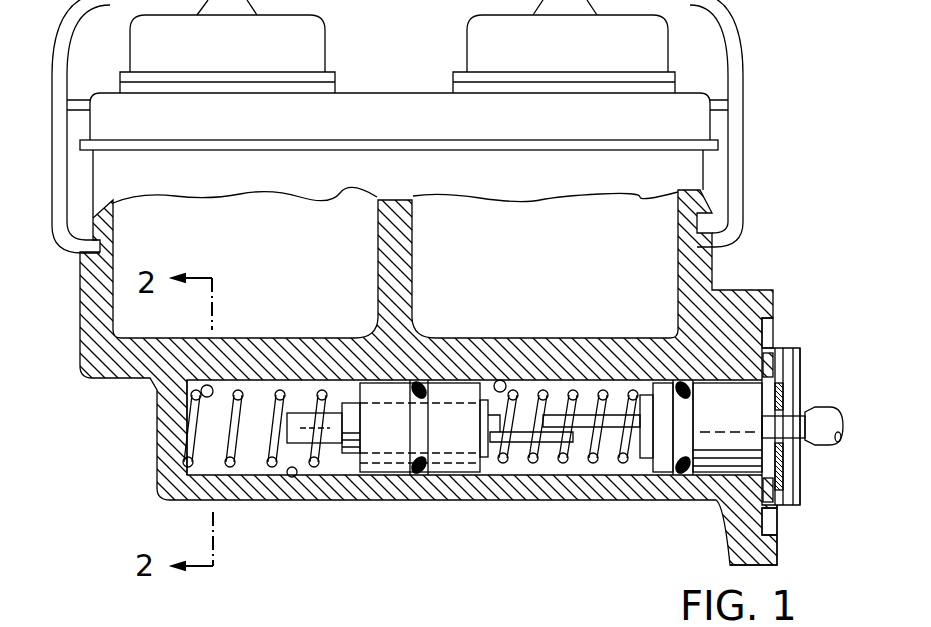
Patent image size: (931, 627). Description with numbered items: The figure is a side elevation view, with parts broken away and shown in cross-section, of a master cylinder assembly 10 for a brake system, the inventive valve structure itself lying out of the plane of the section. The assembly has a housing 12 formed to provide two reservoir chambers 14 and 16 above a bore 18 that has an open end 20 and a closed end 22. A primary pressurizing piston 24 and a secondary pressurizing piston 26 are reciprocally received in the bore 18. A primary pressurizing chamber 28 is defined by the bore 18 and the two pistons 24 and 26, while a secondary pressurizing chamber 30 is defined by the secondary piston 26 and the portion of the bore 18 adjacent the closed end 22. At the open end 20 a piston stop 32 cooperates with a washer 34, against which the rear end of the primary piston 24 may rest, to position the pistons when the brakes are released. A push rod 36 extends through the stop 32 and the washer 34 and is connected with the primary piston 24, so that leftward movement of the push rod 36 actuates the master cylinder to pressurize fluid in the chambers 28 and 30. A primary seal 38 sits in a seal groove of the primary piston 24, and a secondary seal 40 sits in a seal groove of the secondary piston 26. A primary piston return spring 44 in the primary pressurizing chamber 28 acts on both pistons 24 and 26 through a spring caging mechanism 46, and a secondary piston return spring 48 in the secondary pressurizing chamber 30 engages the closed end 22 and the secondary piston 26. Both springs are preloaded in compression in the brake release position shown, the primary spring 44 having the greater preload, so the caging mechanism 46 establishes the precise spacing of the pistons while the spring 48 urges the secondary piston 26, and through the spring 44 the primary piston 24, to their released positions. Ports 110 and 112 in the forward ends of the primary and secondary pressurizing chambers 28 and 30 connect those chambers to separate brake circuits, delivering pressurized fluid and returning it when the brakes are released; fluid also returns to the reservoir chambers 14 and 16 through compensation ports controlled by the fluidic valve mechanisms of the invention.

The master cylinder assembly 10 is at (440, 408).
The housing 12 is at (397, 313).
The reservoir chamber 14 is at (175, 222).
The reservoir chamber 16 is at (553, 226).
The bore 18 is at (296, 478).
The open end 20 is at (800, 460).
The closed end 22 is at (186, 392).
The primary pressurizing piston 24 is at (772, 515).
The secondary pressurizing piston 26 is at (458, 476).
The primary pressurizing chamber 28 is at (553, 477).
The secondary pressurizing chamber 30 is at (247, 466).
The piston stop 32 is at (782, 365).
The washer 34 is at (770, 340).
The push rod 36 is at (822, 418).
The primary seal 38 is at (683, 468).
The secondary seal 40 is at (420, 477).
The primary piston return spring 44 is at (505, 477).
The spring caging mechanism 46 is at (586, 462).
The secondary piston return spring 48 is at (187, 445).
The port 110 is at (497, 380).
The port 112 is at (210, 385).